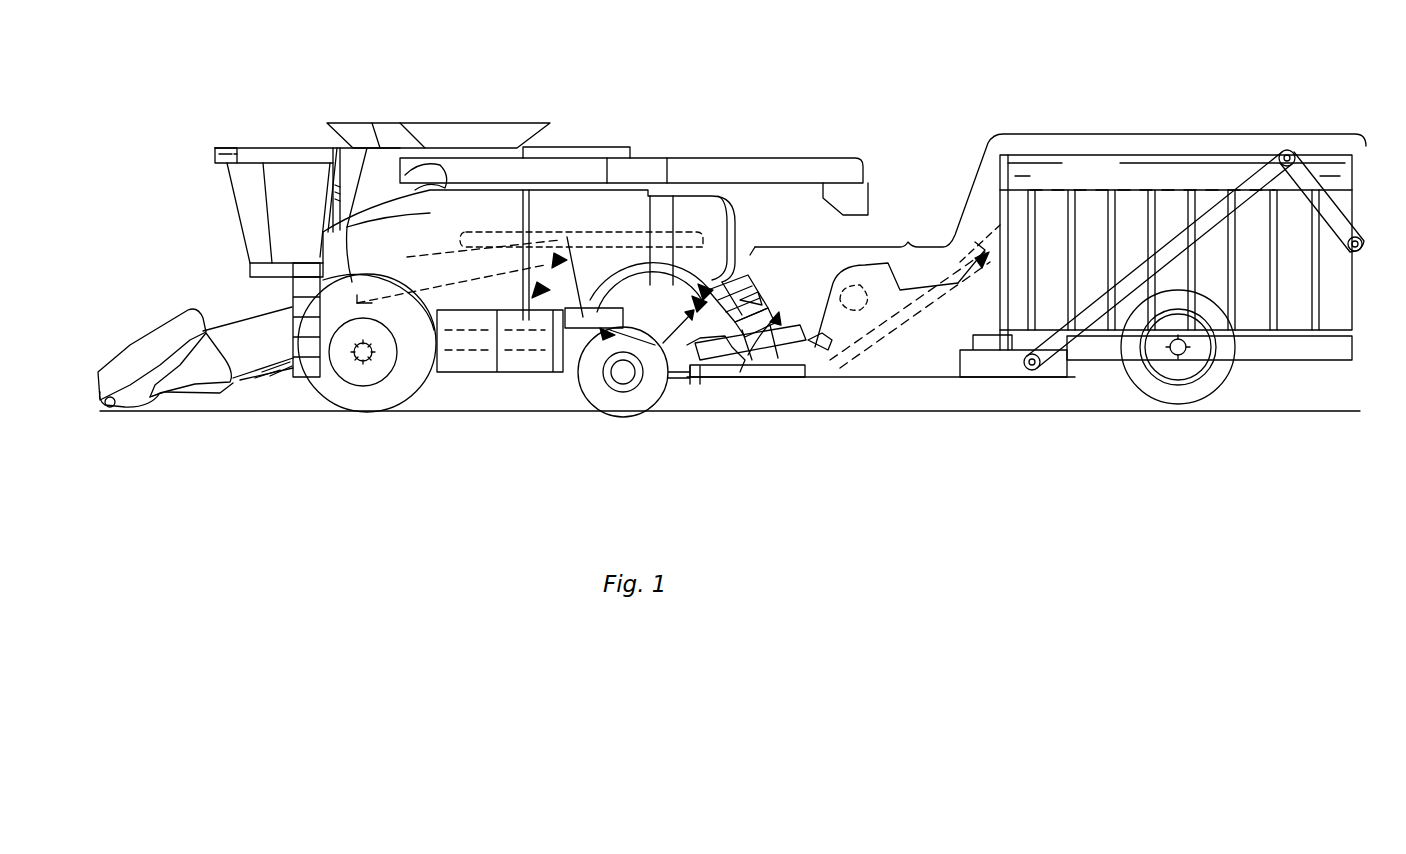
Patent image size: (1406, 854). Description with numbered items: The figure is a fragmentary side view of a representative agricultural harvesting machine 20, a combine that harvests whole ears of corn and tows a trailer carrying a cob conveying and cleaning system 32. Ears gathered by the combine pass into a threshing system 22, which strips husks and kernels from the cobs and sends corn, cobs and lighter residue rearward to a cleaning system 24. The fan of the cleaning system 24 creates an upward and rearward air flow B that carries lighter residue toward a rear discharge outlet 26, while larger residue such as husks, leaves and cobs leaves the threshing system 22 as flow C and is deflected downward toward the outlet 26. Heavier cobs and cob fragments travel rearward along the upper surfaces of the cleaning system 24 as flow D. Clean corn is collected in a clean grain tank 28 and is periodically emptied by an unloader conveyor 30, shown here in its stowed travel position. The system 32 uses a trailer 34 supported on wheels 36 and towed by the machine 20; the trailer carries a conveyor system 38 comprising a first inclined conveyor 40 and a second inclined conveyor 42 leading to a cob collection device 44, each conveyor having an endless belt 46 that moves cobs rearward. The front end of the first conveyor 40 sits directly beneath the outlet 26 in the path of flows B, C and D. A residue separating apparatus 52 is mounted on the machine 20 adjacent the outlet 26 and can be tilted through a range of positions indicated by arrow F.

The agricultural harvesting machine 20 is at (698, 112).
The threshing system 22 is at (400, 250).
The cleaning system 24 is at (525, 348).
The rear discharge outlet 26 is at (648, 388).
The clean grain tank 28 is at (400, 125).
The unloader conveyor 30 is at (836, 158).
The cob conveying and cleaning system 32 is at (768, 222).
The trailer 34 is at (1100, 362).
The wheels 36 is at (1227, 382).
The conveyor system 38 is at (800, 352).
The first inclined conveyor 40 is at (802, 342).
The second inclined conveyor 42 is at (970, 262).
The cob collection device 44 is at (1358, 172).
The endless belt 46 is at (815, 350).
The residue separating apparatus 52 is at (743, 350).
The air flow B is at (620, 320).
The flow of larger residue C is at (642, 306).
The flow of cobs and cob fragments D is at (628, 322).
The arrow indicating range of positions F is at (772, 340).